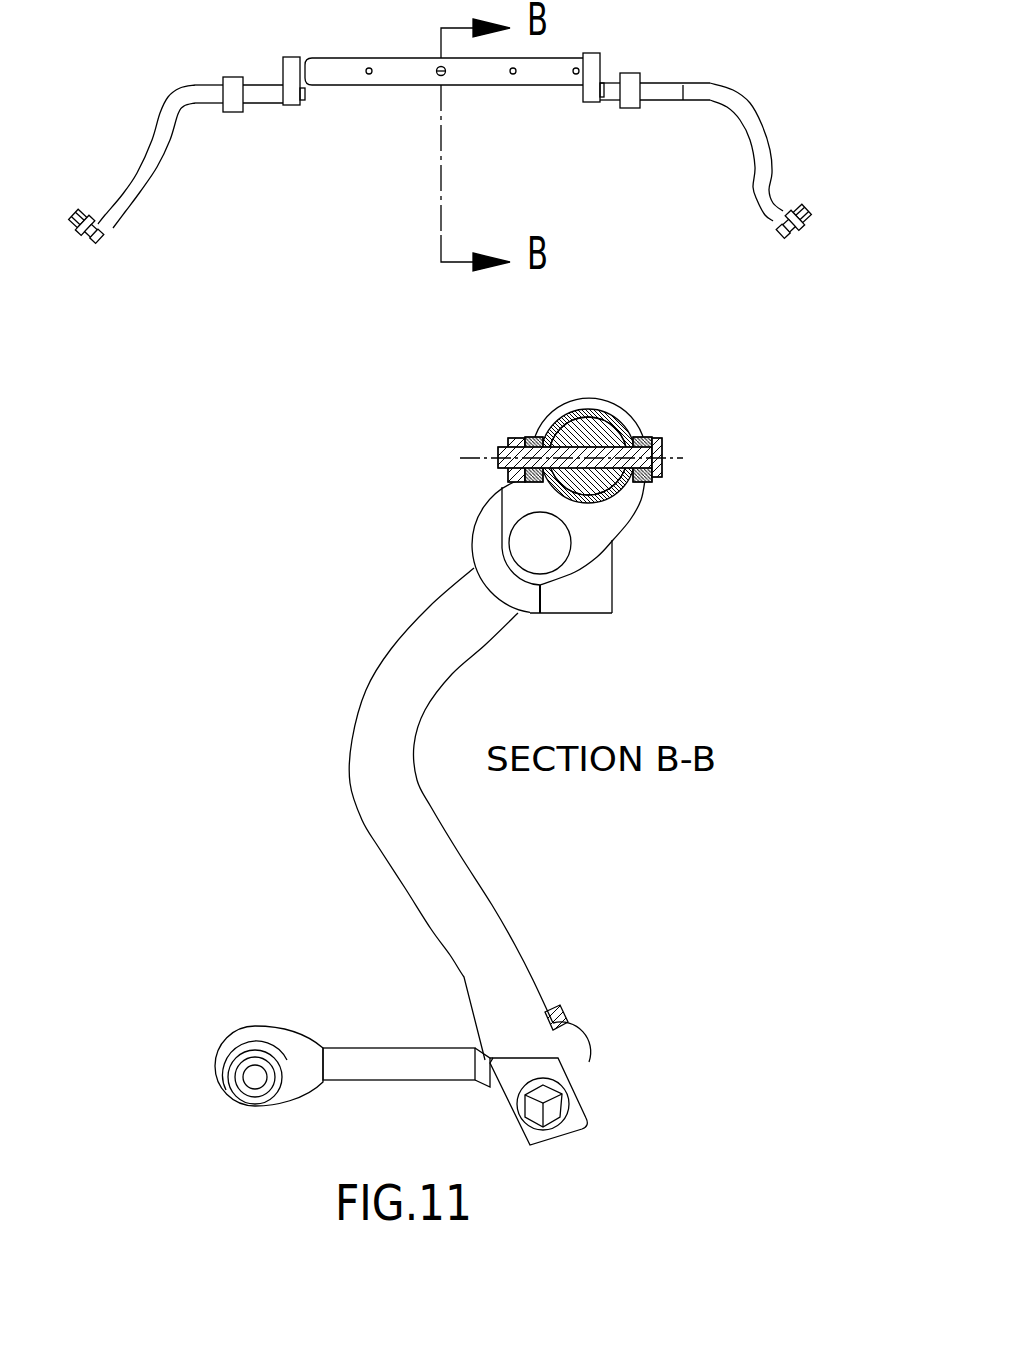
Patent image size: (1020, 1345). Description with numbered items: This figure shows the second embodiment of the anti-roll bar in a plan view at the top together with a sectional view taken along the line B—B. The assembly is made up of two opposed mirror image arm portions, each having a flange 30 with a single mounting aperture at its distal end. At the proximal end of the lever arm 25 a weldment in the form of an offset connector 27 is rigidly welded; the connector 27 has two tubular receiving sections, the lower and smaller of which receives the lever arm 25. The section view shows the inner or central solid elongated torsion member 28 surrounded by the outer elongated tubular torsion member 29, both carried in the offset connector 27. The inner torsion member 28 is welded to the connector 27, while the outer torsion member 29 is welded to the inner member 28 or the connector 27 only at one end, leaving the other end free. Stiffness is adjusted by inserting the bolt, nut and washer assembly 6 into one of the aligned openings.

The bolt, nut and washer assembly 6 is at (615, 451).
The lever arm 25 is at (540, 545).
The offset connector 27 is at (475, 730).
The inner elongated torsion member 28 is at (633, 411).
The outer elongated torsion member 29 is at (594, 391).
The flange 30 is at (615, 1062).